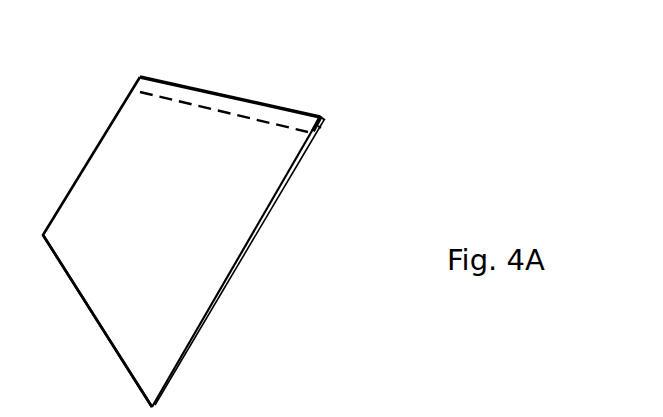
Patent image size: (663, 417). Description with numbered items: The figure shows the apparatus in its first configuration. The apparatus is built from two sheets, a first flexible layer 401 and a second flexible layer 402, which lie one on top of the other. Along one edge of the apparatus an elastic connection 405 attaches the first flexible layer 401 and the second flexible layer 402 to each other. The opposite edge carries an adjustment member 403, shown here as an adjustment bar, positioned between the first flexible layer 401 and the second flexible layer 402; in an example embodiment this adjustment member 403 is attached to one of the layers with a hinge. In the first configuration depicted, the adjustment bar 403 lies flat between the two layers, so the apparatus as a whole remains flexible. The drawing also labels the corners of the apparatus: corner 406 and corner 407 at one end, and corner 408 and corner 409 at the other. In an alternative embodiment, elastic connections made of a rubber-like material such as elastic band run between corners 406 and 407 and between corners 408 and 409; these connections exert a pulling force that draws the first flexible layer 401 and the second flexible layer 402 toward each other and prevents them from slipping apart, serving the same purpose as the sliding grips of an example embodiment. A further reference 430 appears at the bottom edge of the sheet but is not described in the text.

The first flexible layer 401 is at (269, 204).
The second flexible layer 402 is at (265, 222).
The adjustment member 403 is at (320, 128).
The elastic connection 405 is at (99, 322).
The corner 406 is at (140, 77).
The corner 407 is at (141, 78).
The corner 408 is at (319, 117).
The corner 409 is at (326, 123).
The bottom element 430 is at (309, 413).